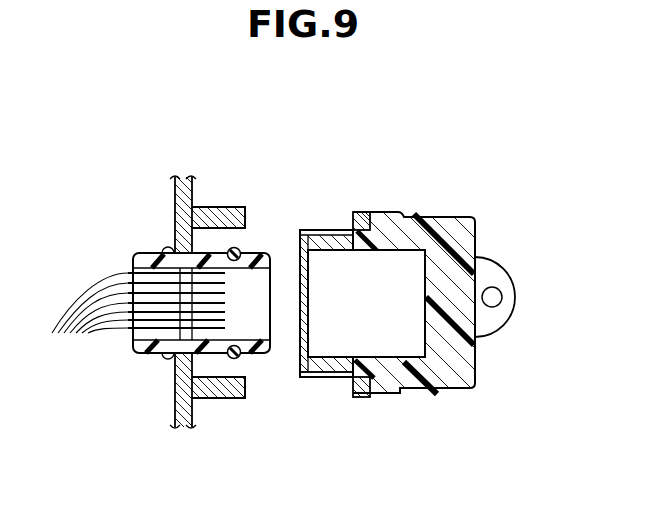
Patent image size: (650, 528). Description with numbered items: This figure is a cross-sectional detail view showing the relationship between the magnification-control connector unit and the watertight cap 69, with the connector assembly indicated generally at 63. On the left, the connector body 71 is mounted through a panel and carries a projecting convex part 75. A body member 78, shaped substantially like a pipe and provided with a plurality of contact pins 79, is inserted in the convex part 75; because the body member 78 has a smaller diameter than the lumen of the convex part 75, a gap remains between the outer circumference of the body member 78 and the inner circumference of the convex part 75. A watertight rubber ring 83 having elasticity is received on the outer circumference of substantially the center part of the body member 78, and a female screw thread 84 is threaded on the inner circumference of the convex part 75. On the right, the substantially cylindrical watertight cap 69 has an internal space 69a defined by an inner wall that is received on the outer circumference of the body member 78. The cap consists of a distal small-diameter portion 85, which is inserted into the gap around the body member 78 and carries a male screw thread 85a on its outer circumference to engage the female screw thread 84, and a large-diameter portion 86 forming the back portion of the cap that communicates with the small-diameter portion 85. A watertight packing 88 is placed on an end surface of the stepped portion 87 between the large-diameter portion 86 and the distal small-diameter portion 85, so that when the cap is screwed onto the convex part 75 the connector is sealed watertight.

The connector 63 is at (259, 168).
The watertight cap 69 is at (478, 235).
The internal space 69a is at (400, 326).
The connector body 71 is at (190, 182).
The convex part 75 is at (222, 207).
The body member 78 is at (145, 252).
The contact pins 79 is at (150, 335).
The watertight rubber ring 83 is at (240, 249).
The female screw thread 84 is at (228, 372).
The distal small-diameter portion 85 is at (323, 212).
The male screw thread 85a is at (323, 379).
The large-diameter portion 86 is at (441, 213).
The stepped portion 87 is at (361, 398).
The watertight packing 88 is at (360, 212).